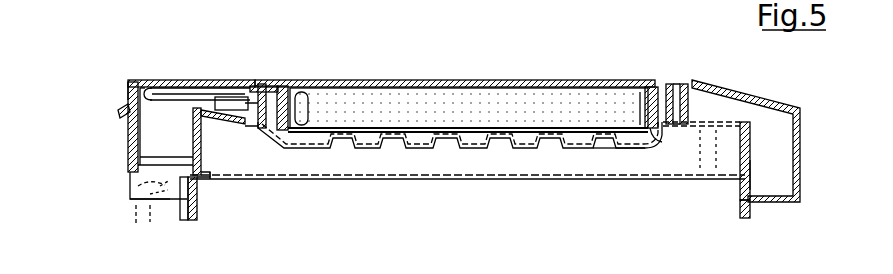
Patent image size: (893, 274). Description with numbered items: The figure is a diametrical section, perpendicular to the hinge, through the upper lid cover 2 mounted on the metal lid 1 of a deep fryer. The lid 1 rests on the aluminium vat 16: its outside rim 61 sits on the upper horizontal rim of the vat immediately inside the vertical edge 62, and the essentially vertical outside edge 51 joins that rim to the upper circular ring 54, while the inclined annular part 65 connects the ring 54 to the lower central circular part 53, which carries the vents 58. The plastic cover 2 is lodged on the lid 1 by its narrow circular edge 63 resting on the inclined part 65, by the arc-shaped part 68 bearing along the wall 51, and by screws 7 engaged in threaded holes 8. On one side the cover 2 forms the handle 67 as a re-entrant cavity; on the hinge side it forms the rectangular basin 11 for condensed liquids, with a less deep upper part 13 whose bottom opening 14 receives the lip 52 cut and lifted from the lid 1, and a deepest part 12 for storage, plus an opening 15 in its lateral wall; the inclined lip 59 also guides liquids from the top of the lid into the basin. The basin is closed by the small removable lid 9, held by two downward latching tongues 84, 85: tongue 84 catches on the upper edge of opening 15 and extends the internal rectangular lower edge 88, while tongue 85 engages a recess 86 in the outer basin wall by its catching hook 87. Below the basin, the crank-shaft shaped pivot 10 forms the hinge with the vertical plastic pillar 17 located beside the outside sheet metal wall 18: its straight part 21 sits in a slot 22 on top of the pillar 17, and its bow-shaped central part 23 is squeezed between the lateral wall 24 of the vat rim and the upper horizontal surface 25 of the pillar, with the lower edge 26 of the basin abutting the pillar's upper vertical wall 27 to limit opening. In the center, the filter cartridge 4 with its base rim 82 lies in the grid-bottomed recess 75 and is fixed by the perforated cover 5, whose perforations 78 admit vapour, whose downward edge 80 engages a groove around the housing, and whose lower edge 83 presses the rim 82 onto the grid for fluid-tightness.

The metal lid 1 is at (462, 152).
The upper lid cover 2 is at (670, 84).
The filter cartridge 4 is at (432, 95).
The cover 5 is at (283, 85).
The screws 7 is at (674, 128).
The threaded holes 8 is at (686, 84).
The removable lid 9 is at (133, 82).
The pivot 10 is at (186, 150).
The basin 11 is at (151, 123).
The deepest part 12 is at (151, 143).
The upper part 13 is at (198, 88).
The opening 14 is at (202, 125).
The opening 15 is at (252, 106).
The vat 16 is at (200, 206).
The pillar 17 is at (99, 237).
The outside sheet metal wall 18 is at (197, 218).
The straight part 21 is at (133, 205).
The slot 22 is at (142, 186).
The central part 23 is at (190, 214).
The lateral wall 24 is at (163, 205).
The upper horizontal surface 25 is at (147, 205).
The lower edge 26 is at (172, 157).
The upper vertical wall 27 is at (132, 200).
The outside edge 51 is at (203, 177).
The lip 52 is at (180, 88).
The central circular part 53 is at (262, 150).
The circular ring 54 is at (694, 128).
The vents 58 is at (598, 147).
The inclined lip 59 is at (228, 124).
The outside rim 61 is at (752, 170).
The vertical edge 62 is at (754, 196).
The circular edge 63 is at (634, 142).
The inclined annular part 65 is at (656, 140).
The handle 67 is at (744, 115).
The circular arc part 68 is at (740, 148).
The recess 75 is at (378, 128).
The perforations 78 is at (338, 82).
The edge 80 is at (648, 87).
The rim 82 is at (300, 93).
The lower edge 83 is at (637, 102).
The latching tongue 84 is at (222, 97).
The latching tongue 85 is at (126, 90).
The recess 86 is at (124, 116).
The catching hook 87 is at (150, 92).
The internal rectangular lower edge 88 is at (142, 86).